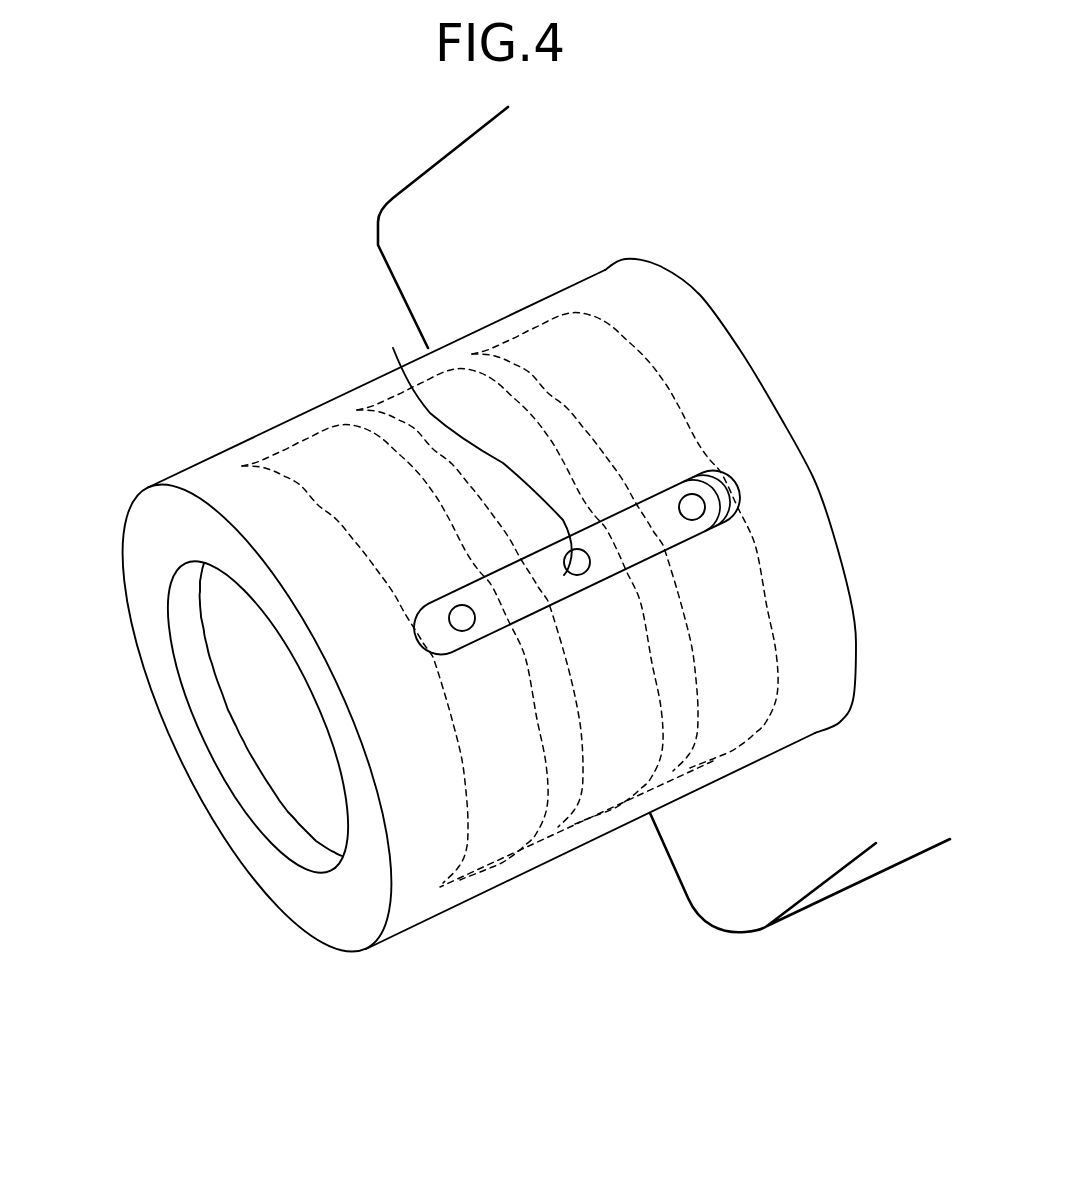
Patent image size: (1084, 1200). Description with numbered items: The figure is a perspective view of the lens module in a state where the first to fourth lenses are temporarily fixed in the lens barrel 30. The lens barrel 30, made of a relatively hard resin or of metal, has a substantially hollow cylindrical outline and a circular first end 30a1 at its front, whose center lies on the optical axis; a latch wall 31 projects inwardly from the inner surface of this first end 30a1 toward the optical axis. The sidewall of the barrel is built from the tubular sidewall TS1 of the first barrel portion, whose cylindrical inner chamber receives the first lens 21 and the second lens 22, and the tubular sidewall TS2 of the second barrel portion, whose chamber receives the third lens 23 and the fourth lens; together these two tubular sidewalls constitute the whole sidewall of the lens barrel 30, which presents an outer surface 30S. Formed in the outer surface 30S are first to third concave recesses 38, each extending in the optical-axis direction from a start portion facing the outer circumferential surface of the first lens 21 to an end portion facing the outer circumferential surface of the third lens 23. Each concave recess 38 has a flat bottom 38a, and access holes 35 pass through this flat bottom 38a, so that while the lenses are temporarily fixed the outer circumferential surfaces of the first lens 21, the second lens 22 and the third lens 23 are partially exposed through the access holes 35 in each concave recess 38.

The lens barrel 30 is at (220, 450).
The outer surface 30S is at (272, 506).
The latch wall 31 is at (188, 648).
The circular first end 30a1 is at (287, 883).
The access holes 35 is at (474, 445).
The concave recess 38 is at (733, 488).
The flat bottom 38a is at (630, 523).
The first lens 21 is at (490, 864).
The second lens 22 is at (599, 810).
The third lens 23 is at (705, 778).
The tubular sidewall TS1 is at (421, 862).
The tubular sidewall TS2 is at (574, 292).